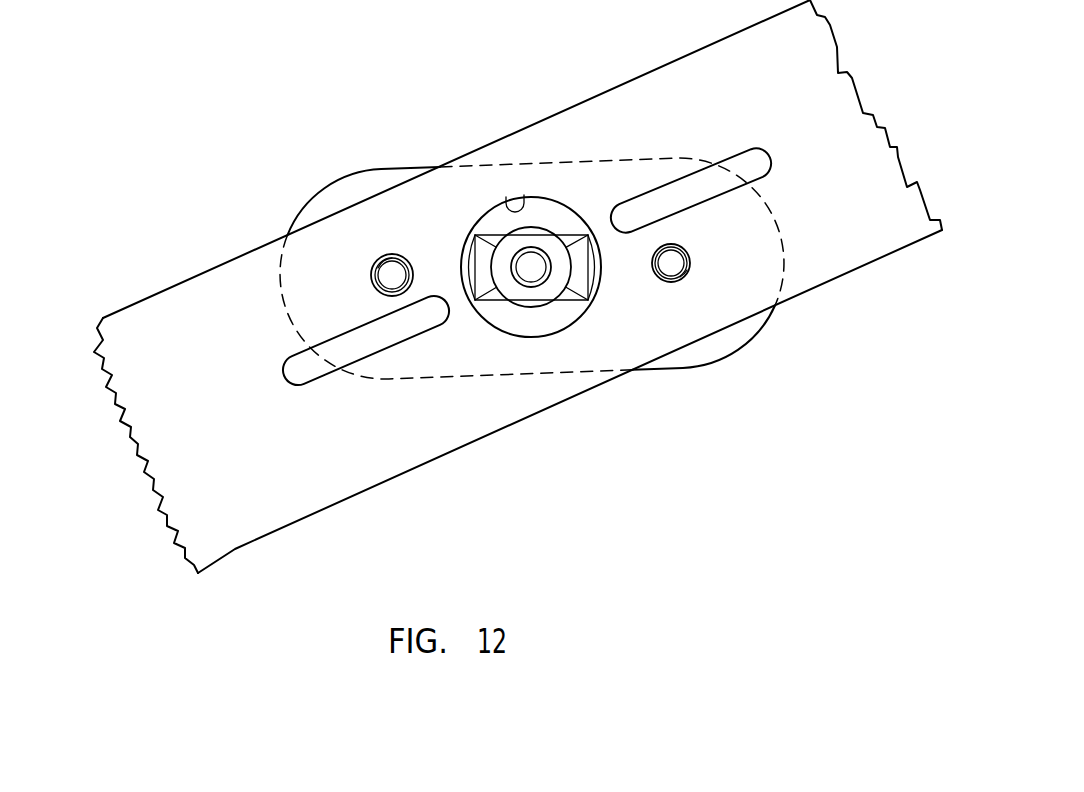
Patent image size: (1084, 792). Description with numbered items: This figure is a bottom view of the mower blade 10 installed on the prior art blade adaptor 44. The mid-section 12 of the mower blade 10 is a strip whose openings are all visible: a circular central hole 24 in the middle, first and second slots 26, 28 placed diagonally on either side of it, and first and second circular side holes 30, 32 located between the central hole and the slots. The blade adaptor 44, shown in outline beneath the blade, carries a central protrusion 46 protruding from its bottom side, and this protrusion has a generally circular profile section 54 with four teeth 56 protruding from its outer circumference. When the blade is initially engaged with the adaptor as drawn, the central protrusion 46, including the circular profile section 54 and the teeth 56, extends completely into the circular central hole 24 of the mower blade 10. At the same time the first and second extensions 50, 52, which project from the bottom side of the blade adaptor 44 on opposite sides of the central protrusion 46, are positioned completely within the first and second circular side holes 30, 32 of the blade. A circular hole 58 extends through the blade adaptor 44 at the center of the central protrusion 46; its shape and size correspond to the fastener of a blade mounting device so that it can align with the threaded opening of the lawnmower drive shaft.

The mower blade 10 is at (152, 296).
The mid-section 12 is at (226, 284).
The circular central hole 24 is at (524, 195).
The first slot 26 is at (398, 340).
The second slot 28 is at (711, 208).
The first circular side hole 30 is at (395, 255).
The second circular side hole 32 is at (676, 282).
The blade adaptor 44 is at (332, 184).
The central protrusion 46 is at (542, 293).
The first extension 50 is at (376, 262).
The second extension 52 is at (688, 276).
The generally circular profile section 54 is at (527, 300).
The teeth 56 is at (481, 242).
The circular hole 58 is at (561, 292).